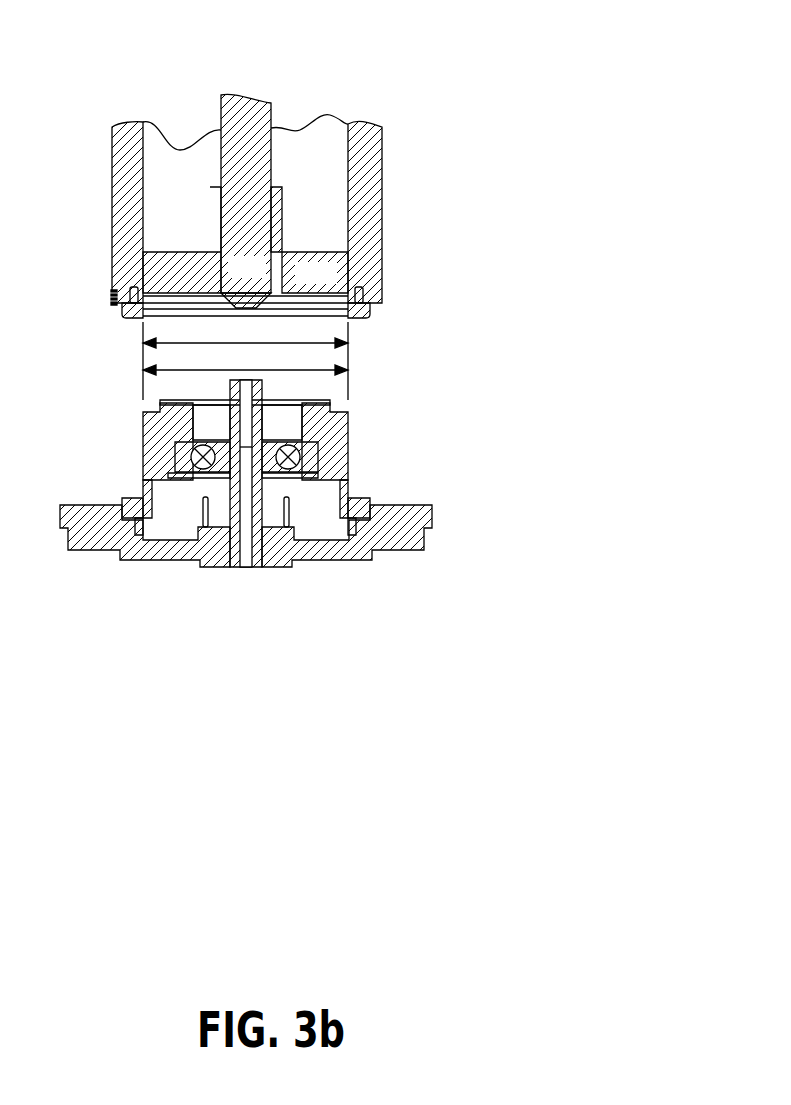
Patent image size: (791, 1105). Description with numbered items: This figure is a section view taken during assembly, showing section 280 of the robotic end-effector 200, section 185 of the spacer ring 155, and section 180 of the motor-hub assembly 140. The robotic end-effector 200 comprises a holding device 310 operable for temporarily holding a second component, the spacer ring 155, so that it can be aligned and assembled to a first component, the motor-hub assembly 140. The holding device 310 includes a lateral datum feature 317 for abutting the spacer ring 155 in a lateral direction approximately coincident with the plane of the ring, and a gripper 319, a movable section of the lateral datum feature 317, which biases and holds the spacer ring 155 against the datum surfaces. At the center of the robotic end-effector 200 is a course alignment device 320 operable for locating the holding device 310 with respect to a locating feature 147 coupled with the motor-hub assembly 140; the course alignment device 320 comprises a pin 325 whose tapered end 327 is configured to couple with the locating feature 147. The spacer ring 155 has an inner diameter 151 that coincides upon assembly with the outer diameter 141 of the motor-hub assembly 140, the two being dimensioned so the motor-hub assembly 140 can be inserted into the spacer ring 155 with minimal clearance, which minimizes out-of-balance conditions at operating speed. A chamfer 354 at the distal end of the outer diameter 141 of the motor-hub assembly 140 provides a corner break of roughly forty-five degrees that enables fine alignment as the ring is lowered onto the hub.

The section of robotic end-effector 280 is at (260, 205).
The robotic end-effector 200 is at (260, 239).
The holding device 310 is at (378, 193).
The pin 325 is at (264, 278).
The course alignment device 320 is at (332, 285).
The tapered end 327 is at (240, 310).
The gripper 319 is at (113, 300).
The section of spacer ring 185 is at (122, 320).
The spacer ring 155 is at (200, 340).
The lateral datum feature 317 is at (370, 312).
The inner diameter 151 is at (315, 343).
The outer diameter 141 is at (315, 366).
The locating feature 147 is at (247, 390).
The chamfer 354 is at (143, 403).
The section of motor-hub assembly 180 is at (264, 466).
The motor-hub assembly 140 is at (246, 466).